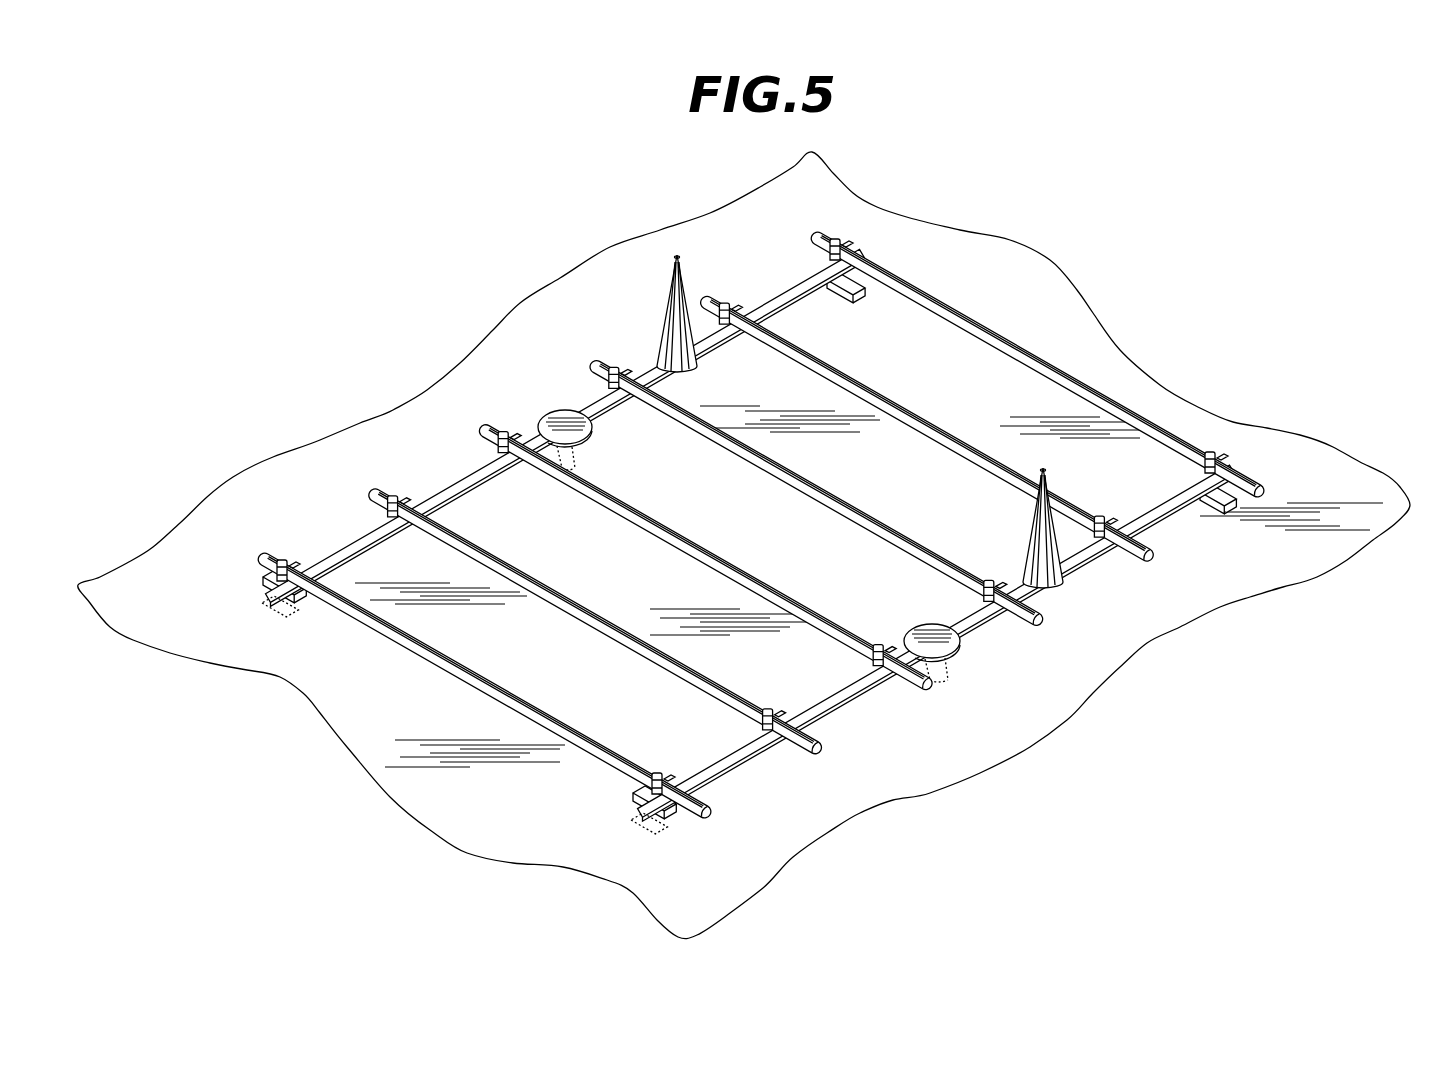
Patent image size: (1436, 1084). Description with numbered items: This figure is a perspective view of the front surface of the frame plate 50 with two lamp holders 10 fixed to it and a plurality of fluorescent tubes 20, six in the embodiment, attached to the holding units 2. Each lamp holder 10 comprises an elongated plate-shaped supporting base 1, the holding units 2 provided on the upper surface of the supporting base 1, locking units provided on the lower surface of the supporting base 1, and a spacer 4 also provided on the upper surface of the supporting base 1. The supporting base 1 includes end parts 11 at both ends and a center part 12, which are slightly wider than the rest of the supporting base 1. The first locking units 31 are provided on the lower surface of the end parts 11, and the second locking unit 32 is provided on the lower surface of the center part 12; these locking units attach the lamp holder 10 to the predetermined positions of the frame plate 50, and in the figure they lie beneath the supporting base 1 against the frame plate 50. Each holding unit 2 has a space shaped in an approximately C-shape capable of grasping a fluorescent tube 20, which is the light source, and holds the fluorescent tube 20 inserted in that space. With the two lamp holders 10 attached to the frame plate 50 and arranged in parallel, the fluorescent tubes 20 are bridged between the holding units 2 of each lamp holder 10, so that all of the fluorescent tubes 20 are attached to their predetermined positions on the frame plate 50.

The supporting base 1 is at (462, 487).
The holding unit 2 is at (825, 255).
The spacer 4 is at (668, 318).
The lamp holder 10 is at (754, 533).
The end part 11 is at (846, 285).
The center part 12 is at (596, 432).
The fluorescent tube 20 is at (1036, 370).
The first locking unit 31 is at (262, 610).
The second locking unit 32 is at (580, 470).
The frame plate 50 is at (972, 250).